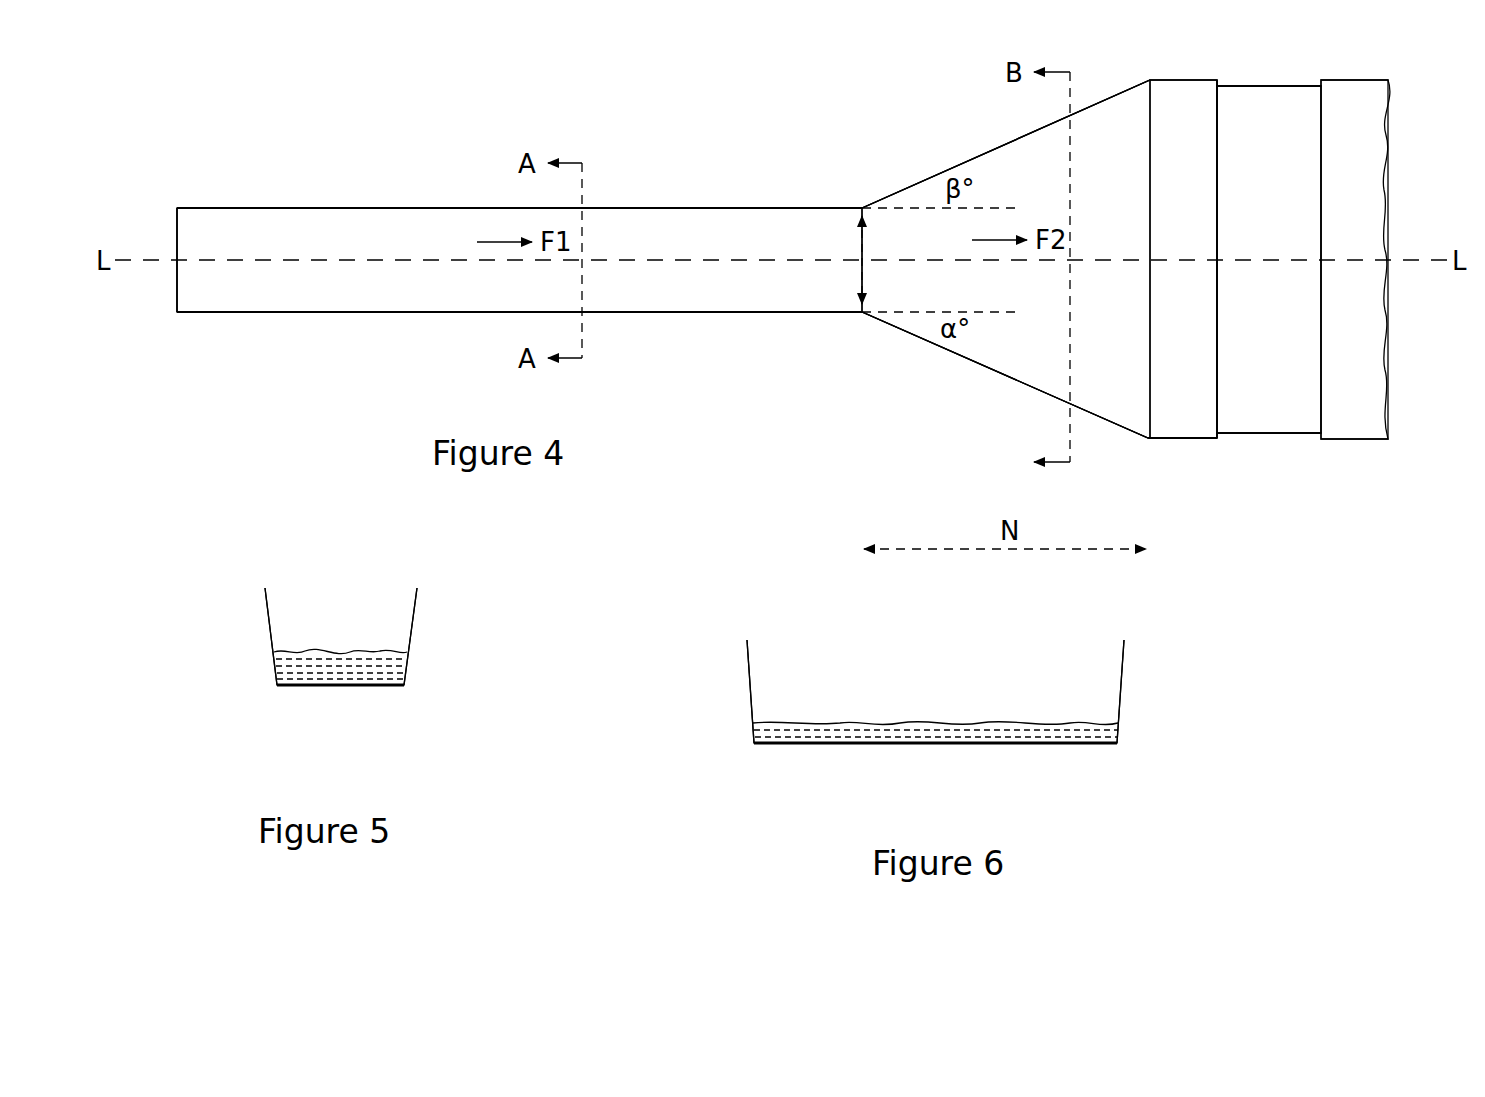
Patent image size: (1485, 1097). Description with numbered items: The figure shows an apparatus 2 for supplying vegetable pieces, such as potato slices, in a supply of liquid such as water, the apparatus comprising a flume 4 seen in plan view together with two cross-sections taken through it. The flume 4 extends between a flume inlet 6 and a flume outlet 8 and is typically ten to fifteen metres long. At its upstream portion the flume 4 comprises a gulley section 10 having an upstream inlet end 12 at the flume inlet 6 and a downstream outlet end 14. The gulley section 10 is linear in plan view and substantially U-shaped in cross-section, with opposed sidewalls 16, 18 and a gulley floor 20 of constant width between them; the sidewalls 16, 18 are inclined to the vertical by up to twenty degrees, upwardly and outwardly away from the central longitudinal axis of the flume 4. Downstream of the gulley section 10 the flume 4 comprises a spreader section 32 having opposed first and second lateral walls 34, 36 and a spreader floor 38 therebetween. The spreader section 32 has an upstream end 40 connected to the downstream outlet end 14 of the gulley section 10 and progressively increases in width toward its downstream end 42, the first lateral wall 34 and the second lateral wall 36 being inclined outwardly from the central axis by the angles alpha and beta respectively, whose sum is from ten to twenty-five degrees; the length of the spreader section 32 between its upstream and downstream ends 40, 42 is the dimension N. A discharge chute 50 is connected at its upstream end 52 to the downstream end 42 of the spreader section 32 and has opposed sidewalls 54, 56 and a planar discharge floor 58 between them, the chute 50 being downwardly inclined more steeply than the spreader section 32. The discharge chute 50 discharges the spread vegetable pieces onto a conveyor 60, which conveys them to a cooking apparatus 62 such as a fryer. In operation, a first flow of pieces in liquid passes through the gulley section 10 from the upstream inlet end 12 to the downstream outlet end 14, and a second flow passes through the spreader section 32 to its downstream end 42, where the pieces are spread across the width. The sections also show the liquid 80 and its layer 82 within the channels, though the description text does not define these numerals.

In FIG. 4, the apparatus 2 is at (712, 366).
In FIG. 4, the flume 4 is at (727, 208).
In FIG. 4, the flume inlet 6 is at (177, 237).
In FIG. 4, the flume outlet 8 is at (1203, 413).
In FIG. 4, the gulley section 10 is at (372, 312).
In FIG. 5, the gulley section 10 is at (415, 618).
In FIG. 4, the upstream inlet end 12 is at (177, 290).
In FIG. 4, the downstream outlet end 14 is at (826, 208).
In FIG. 4, the sidewall 16 is at (462, 312).
In FIG. 5, the sidewall 16 is at (268, 608).
In FIG. 4, the sidewall 18 is at (447, 208).
In FIG. 5, the sidewall 18 is at (410, 653).
In FIG. 4, the gulley floor 20 is at (358, 228).
In FIG. 5, the gulley floor 20 is at (383, 686).
In FIG. 4, the spreader section 32 is at (936, 355).
In FIG. 4, the first lateral wall 34 is at (1103, 424).
In FIG. 6, the first lateral wall 34 is at (751, 678).
In FIG. 4, the second lateral wall 36 is at (1013, 141).
In FIG. 6, the second lateral wall 36 is at (1126, 669).
In FIG. 4, the spreader floor 38 is at (986, 176).
In FIG. 6, the spreader floor 38 is at (963, 745).
In FIG. 4, the upstream end 40 is at (868, 318).
In FIG. 4, the downstream end 42 is at (1143, 440).
In FIG. 4, the discharge chute 50 is at (1178, 80).
In FIG. 4, the upstream end 52 is at (1150, 80).
In FIG. 4, the sidewall 54 is at (1181, 438).
In FIG. 4, the sidewall 56 is at (1206, 80).
In FIG. 4, the discharge floor 58 is at (1218, 433).
In FIG. 4, the conveyor 60 is at (1277, 408).
In FIG. 4, the cooking apparatus 62 is at (1350, 420).
In FIG. 5, the liquid 80 is at (276, 672).
In FIG. 6, the liquid 80 is at (760, 745).
In FIG. 5, the liquid layer 82 is at (293, 686).
In FIG. 6, the liquid layer 82 is at (875, 736).